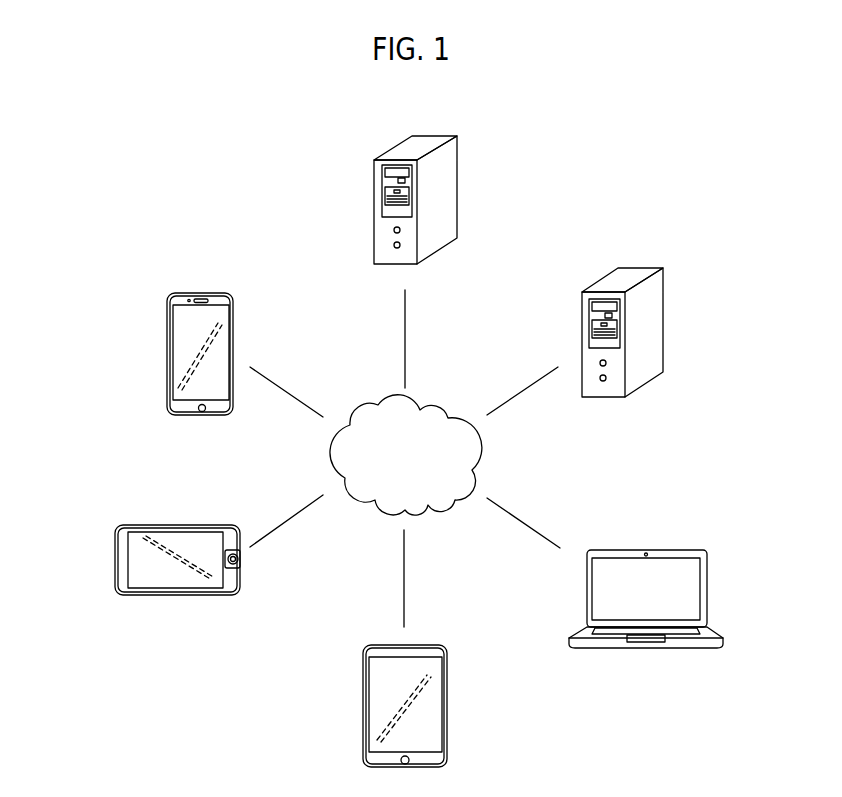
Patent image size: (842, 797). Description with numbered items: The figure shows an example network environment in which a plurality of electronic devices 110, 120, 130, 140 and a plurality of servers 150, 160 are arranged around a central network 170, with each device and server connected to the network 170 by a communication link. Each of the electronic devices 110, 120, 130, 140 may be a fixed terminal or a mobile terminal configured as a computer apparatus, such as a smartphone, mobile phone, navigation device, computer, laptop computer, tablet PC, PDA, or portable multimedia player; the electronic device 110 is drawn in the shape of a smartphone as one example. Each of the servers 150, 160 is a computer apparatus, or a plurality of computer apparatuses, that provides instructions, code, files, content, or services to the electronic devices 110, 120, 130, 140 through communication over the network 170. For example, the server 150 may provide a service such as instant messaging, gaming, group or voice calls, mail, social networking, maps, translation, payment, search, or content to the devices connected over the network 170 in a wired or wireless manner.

The electronic device 110 is at (163, 355).
The electronic device 120 is at (112, 558).
The electronic device 130 is at (448, 705).
The electronic device 140 is at (707, 590).
The server 150 is at (667, 320).
The server 160 is at (457, 188).
The network 170 is at (425, 410).